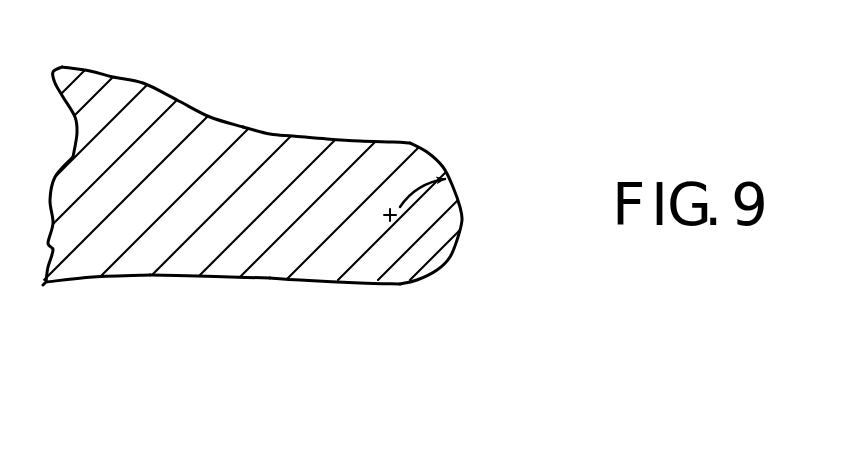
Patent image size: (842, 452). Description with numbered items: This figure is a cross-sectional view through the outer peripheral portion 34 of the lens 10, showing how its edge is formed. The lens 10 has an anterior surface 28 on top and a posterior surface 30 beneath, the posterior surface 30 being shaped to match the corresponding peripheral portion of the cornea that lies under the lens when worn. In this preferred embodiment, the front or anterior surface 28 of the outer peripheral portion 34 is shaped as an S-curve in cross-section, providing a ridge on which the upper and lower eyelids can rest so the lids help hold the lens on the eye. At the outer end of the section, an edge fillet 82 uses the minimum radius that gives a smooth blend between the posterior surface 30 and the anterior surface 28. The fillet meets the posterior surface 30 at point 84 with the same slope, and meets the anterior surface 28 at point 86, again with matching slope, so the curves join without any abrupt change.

The lens 10 is at (327, 161).
The anterior surface 28 is at (92, 86).
The posterior surface 30 is at (71, 284).
The outer peripheral portion 34 is at (252, 86).
The edge fillet 82 is at (460, 232).
The boundary point between edge fillet and posterior surface 84 is at (392, 285).
The boundary point between edge fillet and anterior surface 86 is at (389, 154).